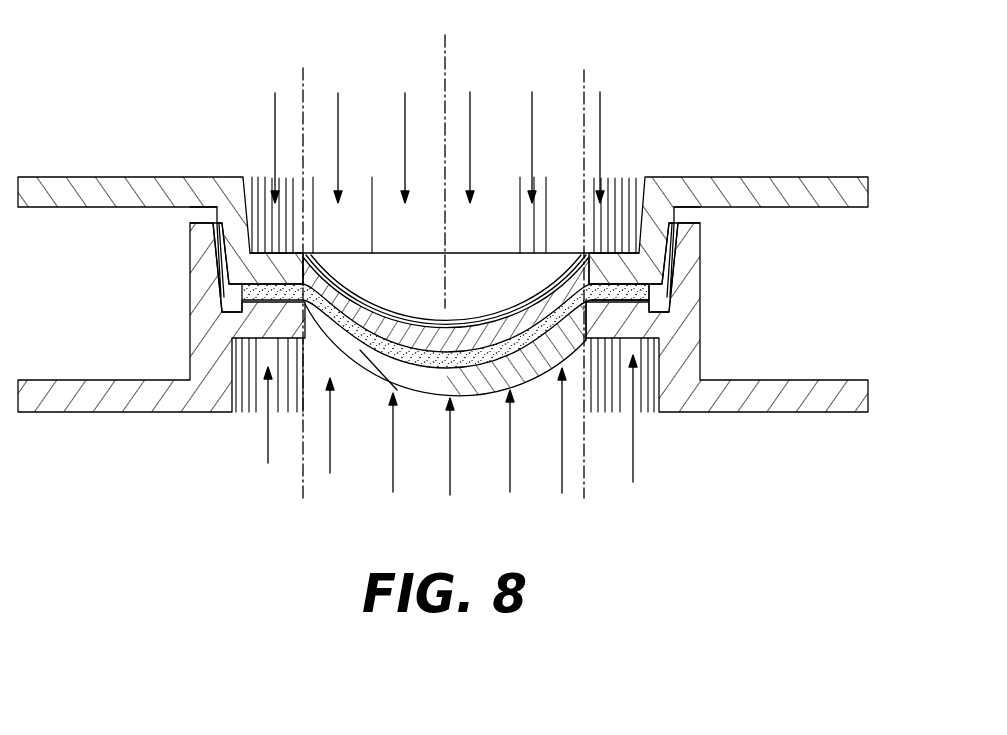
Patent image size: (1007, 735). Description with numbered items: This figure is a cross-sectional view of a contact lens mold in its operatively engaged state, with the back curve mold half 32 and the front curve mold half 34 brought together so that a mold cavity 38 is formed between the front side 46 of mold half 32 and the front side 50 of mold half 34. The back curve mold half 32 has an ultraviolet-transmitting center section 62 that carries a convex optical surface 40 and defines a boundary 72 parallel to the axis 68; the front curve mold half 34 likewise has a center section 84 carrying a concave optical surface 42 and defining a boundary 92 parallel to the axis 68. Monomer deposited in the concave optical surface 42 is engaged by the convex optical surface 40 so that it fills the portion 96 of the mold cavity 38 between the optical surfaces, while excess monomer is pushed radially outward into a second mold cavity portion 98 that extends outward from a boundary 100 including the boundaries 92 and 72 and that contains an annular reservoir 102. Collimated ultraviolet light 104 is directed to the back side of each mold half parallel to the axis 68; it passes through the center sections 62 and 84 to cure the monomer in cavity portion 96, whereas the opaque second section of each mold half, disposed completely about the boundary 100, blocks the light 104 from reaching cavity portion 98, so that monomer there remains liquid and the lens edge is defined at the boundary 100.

The back curve mold half 32 is at (131, 177).
The front curve mold half 34 is at (133, 412).
The front side 46 is at (127, 208).
The front side 50 is at (813, 380).
The boundary 92 is at (222, 332).
The second mold cavity portion 98 is at (669, 266).
The center section 62 is at (427, 267).
The boundary 72 is at (336, 253).
The optical surface 40 is at (354, 332).
The optical surface 42 is at (422, 366).
The mold cavity 38 is at (463, 372).
The center section 84 is at (374, 382).
The portion of mold cavity 96 is at (513, 362).
The annular reservoir 102 is at (660, 306).
The axis 68 is at (445, 80).
The boundary 100 is at (303, 83).
The collimated ultraviolet light 104 is at (600, 150).